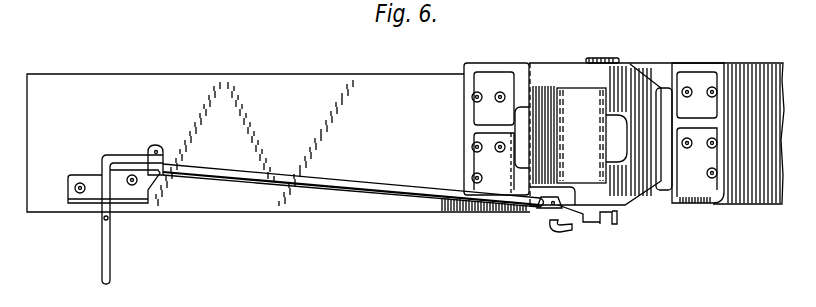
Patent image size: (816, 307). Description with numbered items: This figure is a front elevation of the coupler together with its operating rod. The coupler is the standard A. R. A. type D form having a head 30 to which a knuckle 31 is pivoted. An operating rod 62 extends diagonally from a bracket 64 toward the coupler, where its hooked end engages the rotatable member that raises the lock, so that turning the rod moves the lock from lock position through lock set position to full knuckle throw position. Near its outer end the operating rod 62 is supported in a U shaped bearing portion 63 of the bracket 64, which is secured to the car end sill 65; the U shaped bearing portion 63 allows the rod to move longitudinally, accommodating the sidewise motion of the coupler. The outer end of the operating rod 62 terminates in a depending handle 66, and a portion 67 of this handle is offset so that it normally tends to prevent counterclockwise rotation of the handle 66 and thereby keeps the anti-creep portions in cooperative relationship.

The head 30 is at (632, 72).
The knuckle 31 is at (592, 135).
The operating rod 62 is at (337, 182).
The U shaped bearing portion 63 is at (160, 177).
The bracket 64 is at (128, 193).
The car end sill 65 is at (199, 82).
The handle 66 is at (105, 165).
The offset portion 67 is at (100, 257).